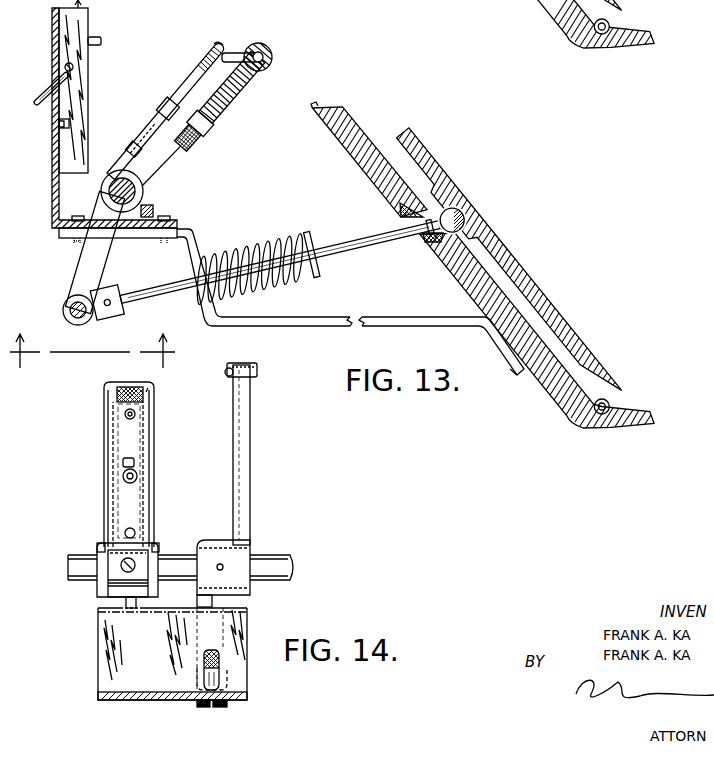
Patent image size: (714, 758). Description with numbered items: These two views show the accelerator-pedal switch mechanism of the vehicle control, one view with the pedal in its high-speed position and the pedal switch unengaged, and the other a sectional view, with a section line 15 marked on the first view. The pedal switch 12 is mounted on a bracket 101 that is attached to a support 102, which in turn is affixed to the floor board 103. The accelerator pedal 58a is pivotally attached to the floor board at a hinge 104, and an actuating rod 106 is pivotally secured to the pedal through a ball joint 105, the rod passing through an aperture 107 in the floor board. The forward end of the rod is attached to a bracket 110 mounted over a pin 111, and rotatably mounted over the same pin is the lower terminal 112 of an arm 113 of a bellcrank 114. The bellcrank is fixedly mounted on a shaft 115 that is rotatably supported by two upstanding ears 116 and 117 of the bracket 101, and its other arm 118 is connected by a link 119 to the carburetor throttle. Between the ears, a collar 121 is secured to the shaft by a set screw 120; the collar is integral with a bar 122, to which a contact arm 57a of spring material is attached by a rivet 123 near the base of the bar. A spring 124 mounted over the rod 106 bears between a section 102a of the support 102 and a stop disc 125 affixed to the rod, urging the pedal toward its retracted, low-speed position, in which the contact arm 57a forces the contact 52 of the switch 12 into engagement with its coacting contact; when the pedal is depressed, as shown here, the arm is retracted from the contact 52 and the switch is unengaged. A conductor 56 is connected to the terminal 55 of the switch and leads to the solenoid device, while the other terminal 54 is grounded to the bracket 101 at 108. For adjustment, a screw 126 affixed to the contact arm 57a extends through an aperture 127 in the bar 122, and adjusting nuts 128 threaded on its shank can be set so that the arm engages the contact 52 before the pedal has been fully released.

In FIG. 14, the pedal switch 12 is at (146, 392).
In FIG. 13, the section line 15 is at (92, 363).
In FIG. 13, the contact 52 is at (97, 36).
In FIG. 14, the contact 52 is at (136, 413).
In FIG. 13, the terminal 54 is at (59, 123).
In FIG. 13, the terminal 55 is at (64, 66).
In FIG. 13, the conductor 56 is at (45, 95).
In FIG. 13, the contact arm 57a is at (213, 44).
In FIG. 14, the contact arm 57a is at (117, 392).
In FIG. 13, the accelerator pedal 58a is at (553, 294).
In FIG. 13, the bracket 101 is at (52, 195).
In FIG. 14, the bracket 101 is at (150, 498).
In FIG. 13, the support 102 is at (68, 240).
In FIG. 14, the support 102 is at (98, 608).
In FIG. 13, the section of the support 102a is at (196, 270).
In FIG. 14, the section of the support 102a is at (120, 668).
In FIG. 13, the floor board 103 is at (368, 140).
In FIG. 13, the hinge 104 is at (615, 30).
In FIG. 13, the ball joint 105 is at (466, 215).
In FIG. 13, the actuating rod 106 is at (357, 241).
In FIG. 14, the actuating rod 106 is at (212, 652).
In FIG. 13, the aperture 107 is at (424, 243).
In FIG. 13, the ground connection 108 is at (60, 128).
In FIG. 13, the bracket 110 is at (110, 321).
In FIG. 14, the bracket 110 is at (226, 684).
In FIG. 13, the pin 111 is at (74, 318).
In FIG. 13, the lower terminal 112 is at (68, 303).
In FIG. 13, the arm 113 is at (97, 262).
In FIG. 14, the arm 113 is at (213, 599).
In FIG. 14, the bellcrank 114 is at (250, 480).
In FIG. 13, the shaft 115 is at (137, 193).
In FIG. 14, the shaft 115 is at (290, 555).
In FIG. 14, the upstanding ear 116 is at (98, 545).
In FIG. 14, the upstanding ear 117 is at (160, 547).
In FIG. 13, the arm 118 is at (269, 80).
In FIG. 14, the arm 118 is at (251, 412).
In FIG. 13, the link 119 is at (233, 52).
In FIG. 14, the link 119 is at (255, 369).
In FIG. 13, the set screw 120 is at (154, 211).
In FIG. 14, the set screw 120 is at (138, 572).
In FIG. 13, the collar 121 is at (138, 180).
In FIG. 14, the collar 121 is at (108, 582).
In FIG. 13, the bar 122 is at (187, 90).
In FIG. 14, the bar 122 is at (135, 437).
In FIG. 13, the rivet 123 is at (129, 148).
In FIG. 14, the rivet 123 is at (126, 530).
In FIG. 13, the spring 124 is at (230, 255).
In FIG. 13, the stop disc 125 is at (301, 236).
In FIG. 13, the screw 126 is at (200, 146).
In FIG. 14, the screw 126 is at (123, 476).
In FIG. 13, the aperture 127 is at (165, 100).
In FIG. 14, the aperture 127 is at (123, 462).
In FIG. 13, the adjusting nuts 128 is at (212, 128).